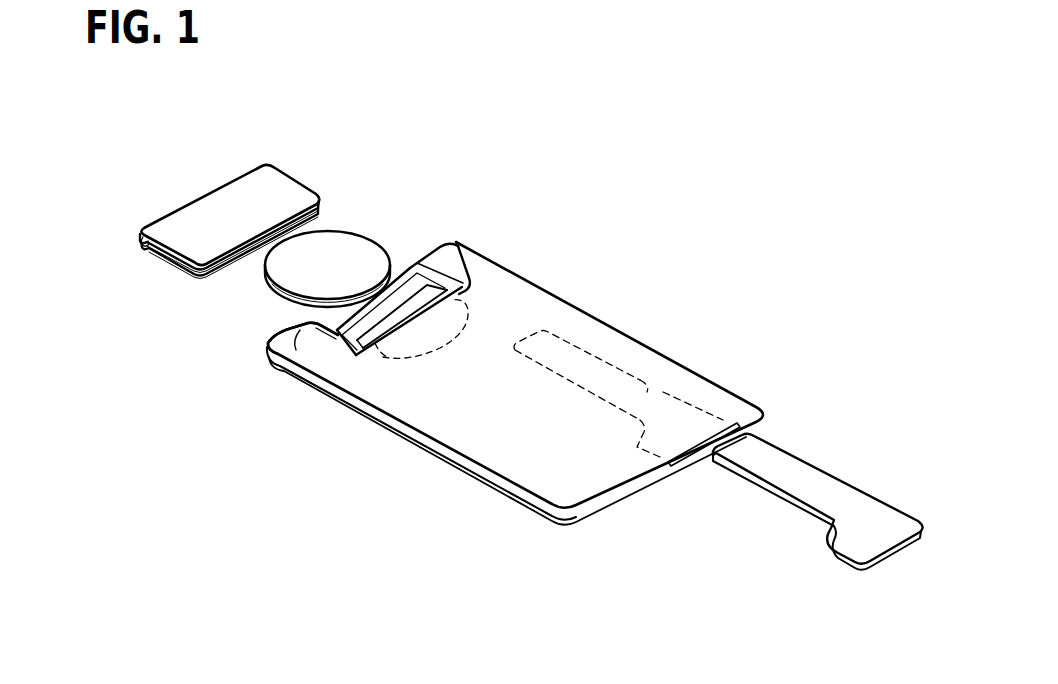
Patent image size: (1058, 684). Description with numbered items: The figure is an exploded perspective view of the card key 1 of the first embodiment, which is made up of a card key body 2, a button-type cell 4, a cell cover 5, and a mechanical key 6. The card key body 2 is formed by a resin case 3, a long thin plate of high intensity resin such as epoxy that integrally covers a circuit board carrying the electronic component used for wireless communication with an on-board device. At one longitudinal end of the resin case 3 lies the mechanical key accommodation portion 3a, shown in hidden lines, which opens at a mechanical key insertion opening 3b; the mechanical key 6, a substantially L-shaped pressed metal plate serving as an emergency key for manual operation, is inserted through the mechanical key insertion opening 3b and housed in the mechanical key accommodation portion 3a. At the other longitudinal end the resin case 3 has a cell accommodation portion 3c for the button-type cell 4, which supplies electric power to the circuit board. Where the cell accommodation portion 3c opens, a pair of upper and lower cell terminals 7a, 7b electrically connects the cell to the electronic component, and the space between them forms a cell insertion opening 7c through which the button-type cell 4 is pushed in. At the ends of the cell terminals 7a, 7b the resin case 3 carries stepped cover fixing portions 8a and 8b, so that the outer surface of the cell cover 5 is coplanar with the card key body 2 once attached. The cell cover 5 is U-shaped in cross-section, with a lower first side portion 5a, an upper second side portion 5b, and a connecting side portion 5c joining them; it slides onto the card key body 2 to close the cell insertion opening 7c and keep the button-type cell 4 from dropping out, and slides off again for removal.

The card key 1 is at (555, 394).
The card key body 2 is at (538, 315).
The resin case 3 is at (555, 397).
The mechanical key accommodation portion 3a is at (668, 392).
The mechanical key insertion opening 3b is at (748, 430).
The cell accommodation portion 3c is at (387, 352).
The button-type cell 4 is at (342, 245).
The cell cover 5 is at (213, 200).
The first side portion 5a is at (170, 268).
The second side portion 5b is at (275, 187).
The connecting side portion 5c is at (142, 243).
The mechanical key 6 is at (813, 480).
The cell terminal 7a is at (458, 280).
The cell terminal 7b is at (402, 297).
The cell insertion opening 7c is at (340, 355).
The cover fixing portion 8a is at (300, 337).
The cover fixing portion 8b is at (430, 277).